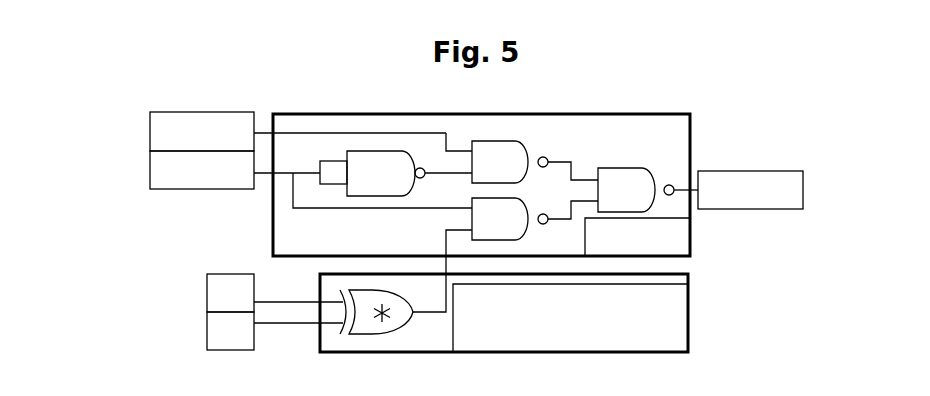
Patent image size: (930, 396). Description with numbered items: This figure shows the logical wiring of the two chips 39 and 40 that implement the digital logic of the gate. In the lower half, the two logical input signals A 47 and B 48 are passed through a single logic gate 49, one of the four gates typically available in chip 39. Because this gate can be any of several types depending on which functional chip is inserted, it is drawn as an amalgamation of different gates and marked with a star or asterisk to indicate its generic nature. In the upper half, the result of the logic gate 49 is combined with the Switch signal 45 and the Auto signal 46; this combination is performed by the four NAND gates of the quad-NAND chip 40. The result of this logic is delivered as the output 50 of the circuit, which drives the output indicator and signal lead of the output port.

The chip 39 is at (695, 310).
The 4011 chip 40 is at (367, 112).
The Switch signal 45 is at (148, 132).
The Auto signal 46 is at (148, 170).
The logical input signal A 47 is at (202, 295).
The logical input signal B 48 is at (202, 329).
The logic gate 49 is at (363, 337).
The output 50 is at (748, 167).